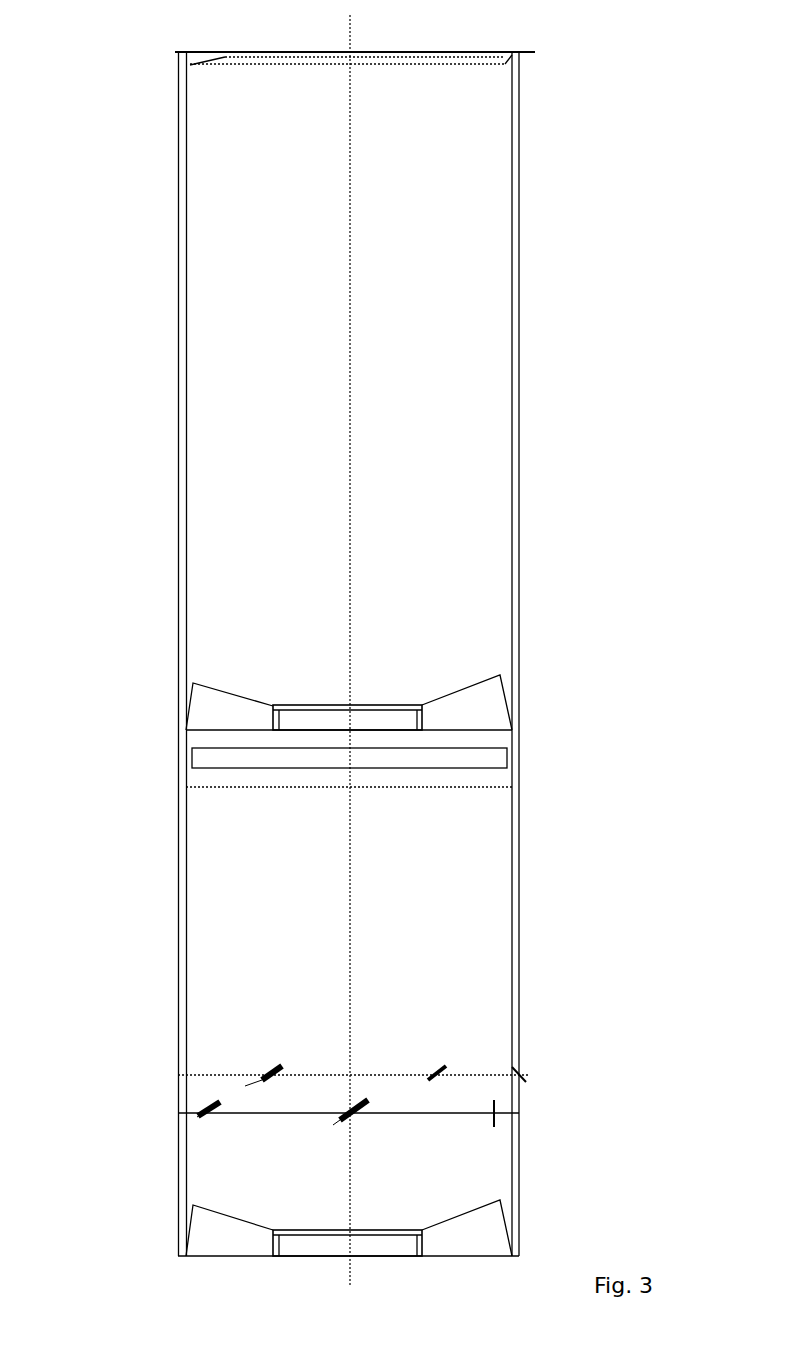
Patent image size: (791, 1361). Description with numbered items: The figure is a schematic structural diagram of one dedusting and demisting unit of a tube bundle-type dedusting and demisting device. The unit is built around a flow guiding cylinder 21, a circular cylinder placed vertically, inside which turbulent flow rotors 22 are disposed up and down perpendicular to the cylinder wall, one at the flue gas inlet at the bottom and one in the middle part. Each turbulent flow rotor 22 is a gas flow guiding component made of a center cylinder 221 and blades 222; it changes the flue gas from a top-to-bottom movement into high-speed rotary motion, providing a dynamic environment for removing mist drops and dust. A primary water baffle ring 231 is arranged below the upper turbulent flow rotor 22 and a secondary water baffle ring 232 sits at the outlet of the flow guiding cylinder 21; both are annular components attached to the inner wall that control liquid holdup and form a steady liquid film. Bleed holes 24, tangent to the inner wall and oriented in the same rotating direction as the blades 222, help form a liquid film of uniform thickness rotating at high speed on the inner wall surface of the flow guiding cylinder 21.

The flow guiding cylinder 21 is at (178, 945).
The turbulent flow rotor 22 is at (350, 1235).
The bleed holes 24 is at (202, 1103).
The center cylinder 221 is at (350, 707).
The blades 222 is at (242, 712).
The primary water baffle ring 231 is at (228, 787).
The secondary water baffle ring 232 is at (200, 48).